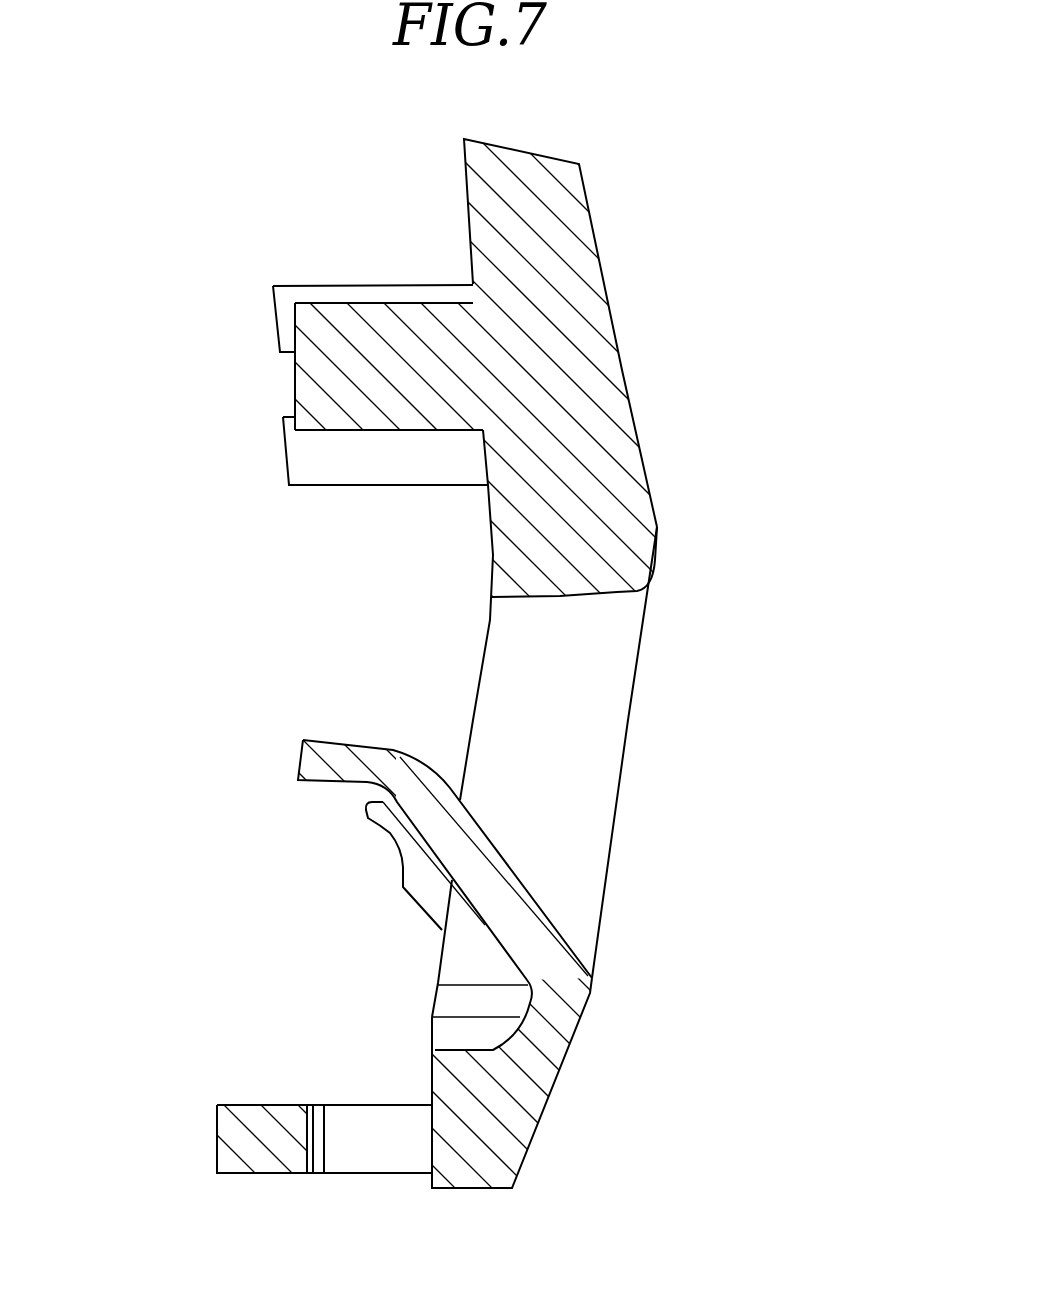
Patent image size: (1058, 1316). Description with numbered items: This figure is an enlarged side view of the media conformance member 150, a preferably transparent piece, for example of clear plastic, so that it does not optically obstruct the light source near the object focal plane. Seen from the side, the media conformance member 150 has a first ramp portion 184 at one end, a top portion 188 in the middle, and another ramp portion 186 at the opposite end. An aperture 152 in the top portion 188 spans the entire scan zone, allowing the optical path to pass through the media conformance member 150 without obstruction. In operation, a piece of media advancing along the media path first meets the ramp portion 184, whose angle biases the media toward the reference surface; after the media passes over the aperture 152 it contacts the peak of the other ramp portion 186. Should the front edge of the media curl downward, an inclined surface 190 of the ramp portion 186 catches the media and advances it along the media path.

The media conformance member 150 is at (257, 562).
The aperture 152 is at (623, 617).
The ramp portion 184 is at (705, 332).
The ramp portion 186 is at (608, 1137).
The top portion 188 is at (688, 823).
The inclined surface 190 is at (527, 890).